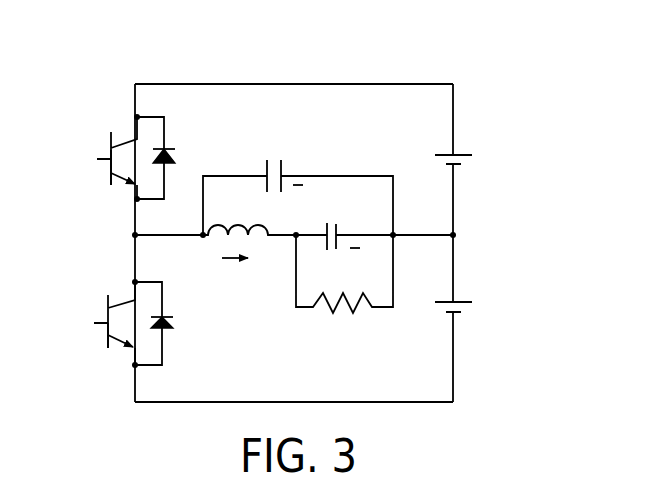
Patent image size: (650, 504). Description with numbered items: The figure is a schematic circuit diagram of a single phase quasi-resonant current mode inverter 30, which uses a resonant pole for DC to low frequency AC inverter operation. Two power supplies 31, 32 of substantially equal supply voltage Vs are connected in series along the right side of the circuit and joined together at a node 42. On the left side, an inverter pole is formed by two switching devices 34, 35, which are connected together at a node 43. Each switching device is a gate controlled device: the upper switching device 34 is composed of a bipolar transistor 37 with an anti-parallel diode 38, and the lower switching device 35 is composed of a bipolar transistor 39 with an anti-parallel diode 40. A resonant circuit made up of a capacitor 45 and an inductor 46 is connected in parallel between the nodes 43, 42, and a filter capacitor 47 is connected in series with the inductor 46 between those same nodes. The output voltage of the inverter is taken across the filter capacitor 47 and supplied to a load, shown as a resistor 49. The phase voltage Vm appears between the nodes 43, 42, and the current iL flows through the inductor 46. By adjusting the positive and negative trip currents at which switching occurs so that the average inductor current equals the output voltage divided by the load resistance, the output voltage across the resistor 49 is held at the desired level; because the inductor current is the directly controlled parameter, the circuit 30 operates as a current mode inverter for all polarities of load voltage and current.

The inverter 30 is at (291, 83).
The power supply 31 is at (461, 151).
The power supply 32 is at (462, 301).
The switching device 34 is at (100, 149).
The switching device 35 is at (100, 310).
The bipolar transistor 37 is at (112, 178).
The anti-parallel diode 38 is at (169, 152).
The bipolar transistor 39 is at (118, 338).
The anti-parallel diode 40 is at (175, 325).
The node 42 is at (456, 237).
The node 43 is at (131, 233).
The capacitor 45 is at (282, 167).
The inductor 46 is at (222, 233).
The filter capacitor 47 is at (342, 232).
The resistor 49 is at (328, 308).